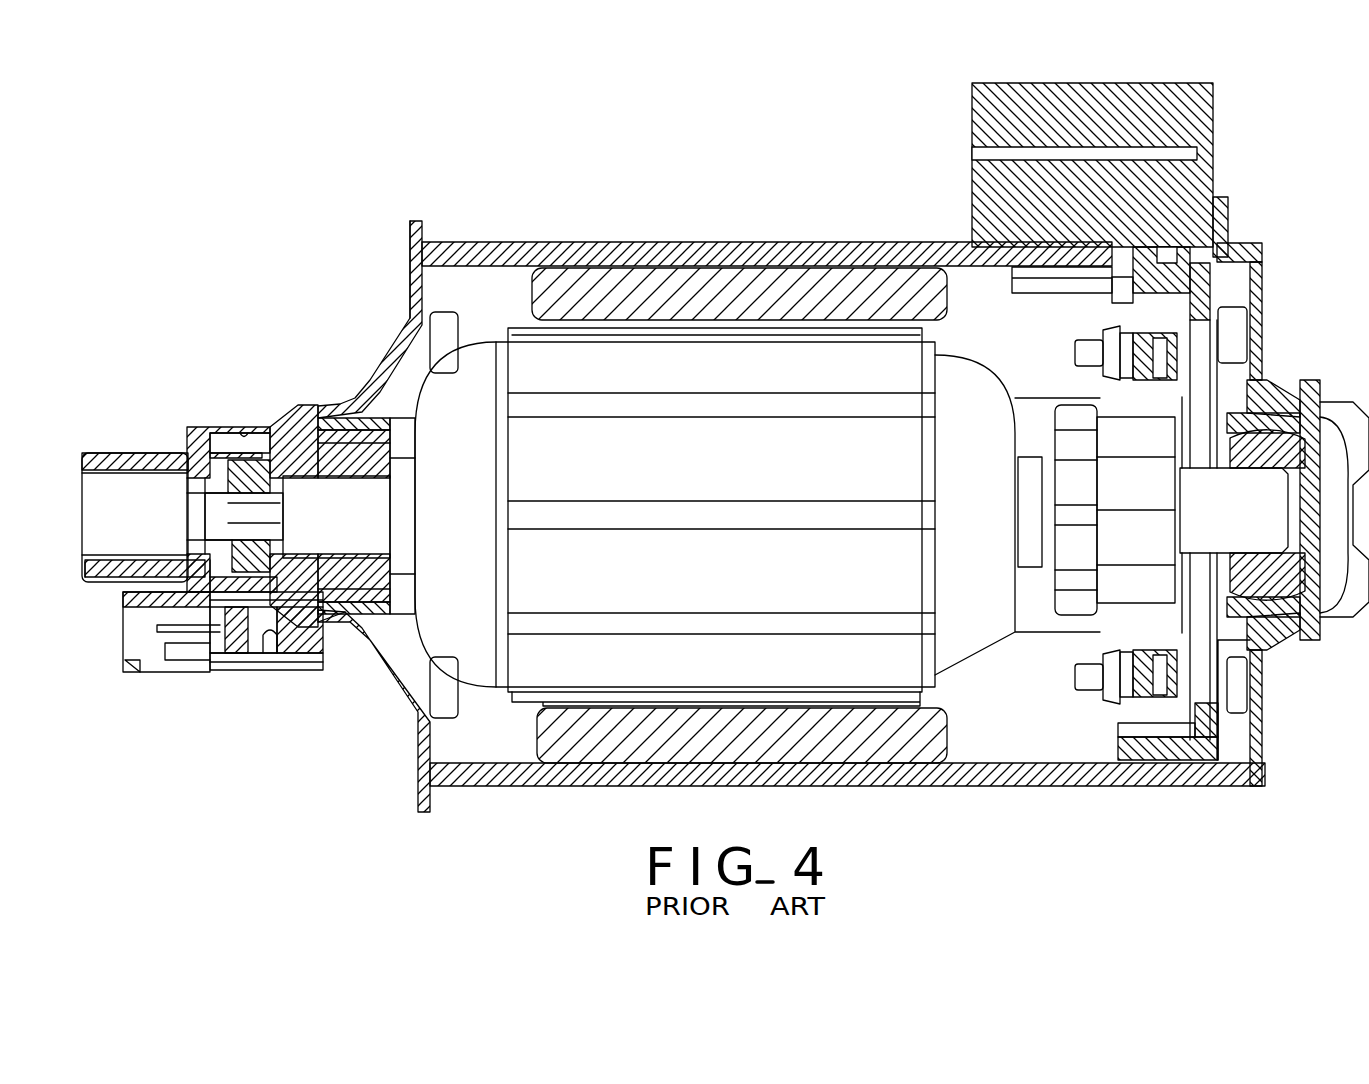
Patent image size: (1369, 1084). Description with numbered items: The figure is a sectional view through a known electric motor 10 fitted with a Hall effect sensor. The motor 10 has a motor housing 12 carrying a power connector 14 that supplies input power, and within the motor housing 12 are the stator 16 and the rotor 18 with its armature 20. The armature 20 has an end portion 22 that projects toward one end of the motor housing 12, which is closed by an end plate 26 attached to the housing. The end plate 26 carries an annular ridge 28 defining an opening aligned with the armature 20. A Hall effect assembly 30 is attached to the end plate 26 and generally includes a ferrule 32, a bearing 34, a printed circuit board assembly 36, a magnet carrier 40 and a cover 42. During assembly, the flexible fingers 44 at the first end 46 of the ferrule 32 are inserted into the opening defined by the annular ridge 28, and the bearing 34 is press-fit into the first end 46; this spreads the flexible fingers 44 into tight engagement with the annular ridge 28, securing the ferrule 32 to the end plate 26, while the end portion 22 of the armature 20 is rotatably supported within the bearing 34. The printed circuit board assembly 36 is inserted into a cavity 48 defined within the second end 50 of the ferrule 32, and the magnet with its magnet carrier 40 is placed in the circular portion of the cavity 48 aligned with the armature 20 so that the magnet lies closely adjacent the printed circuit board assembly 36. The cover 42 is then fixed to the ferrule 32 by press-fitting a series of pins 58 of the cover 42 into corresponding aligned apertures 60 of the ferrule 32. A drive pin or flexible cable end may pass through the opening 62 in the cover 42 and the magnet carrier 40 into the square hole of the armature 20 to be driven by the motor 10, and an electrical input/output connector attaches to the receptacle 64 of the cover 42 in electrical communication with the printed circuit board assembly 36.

The motor 10 is at (699, 170).
The motor housing 12 is at (840, 244).
The power connector 14 is at (1178, 100).
The stator 16 is at (650, 285).
The rotor 18 is at (585, 360).
The armature 20 is at (405, 498).
The end portion 22 is at (357, 523).
The end plate 26 is at (416, 272).
The annular ridge 28 is at (340, 405).
The Hall effect assembly 30 is at (163, 352).
The ferrule 32 is at (300, 397).
The bearing 34 is at (372, 455).
The printed circuit board assembly 36 is at (243, 632).
The magnet carrier 40 is at (207, 535).
The cover 42 is at (128, 448).
The flexible fingers 44 is at (393, 424).
The first end 46 is at (384, 622).
The cavity 48 is at (268, 632).
The second end 50 is at (218, 672).
The pins 58 is at (212, 440).
The apertures 60 is at (252, 430).
The opening 62 is at (86, 562).
The receptacle 64 is at (138, 627).